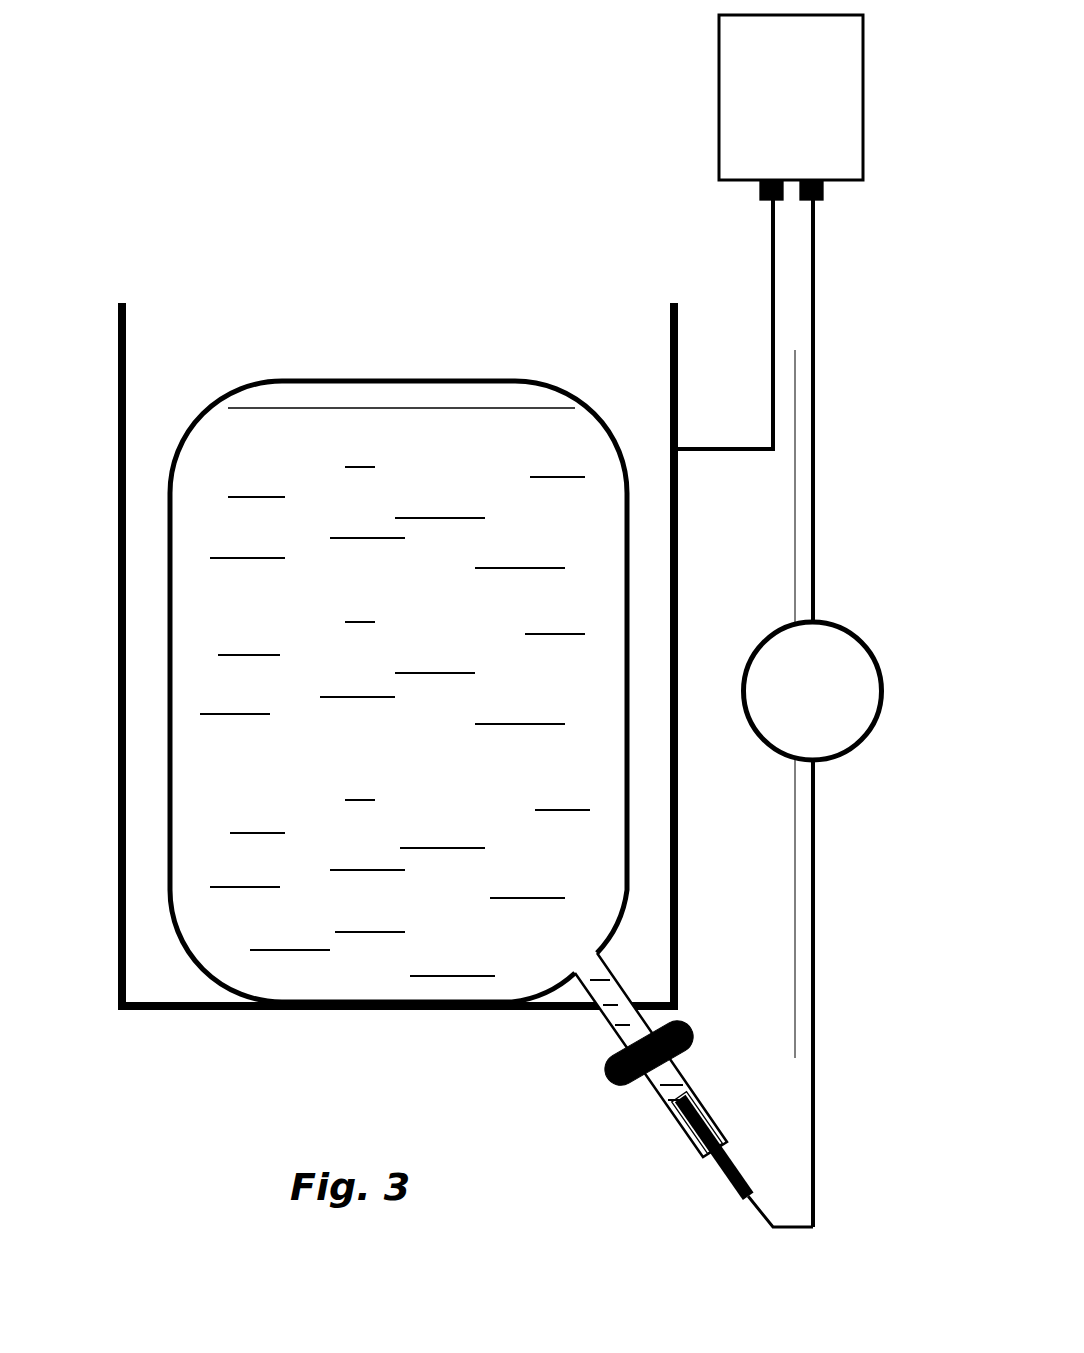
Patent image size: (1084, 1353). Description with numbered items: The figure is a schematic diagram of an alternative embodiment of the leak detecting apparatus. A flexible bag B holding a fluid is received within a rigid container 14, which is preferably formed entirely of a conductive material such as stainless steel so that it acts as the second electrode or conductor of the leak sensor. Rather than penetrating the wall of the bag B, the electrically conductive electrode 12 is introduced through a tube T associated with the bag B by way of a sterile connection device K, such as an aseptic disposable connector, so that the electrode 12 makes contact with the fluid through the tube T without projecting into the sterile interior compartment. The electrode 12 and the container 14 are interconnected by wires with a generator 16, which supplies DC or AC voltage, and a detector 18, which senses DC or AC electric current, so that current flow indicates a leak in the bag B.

The rigid container 14 is at (118, 360).
The bag B is at (250, 390).
The tube T is at (603, 1022).
The sterile connection device K is at (688, 1027).
The electrode 12 is at (725, 1178).
The generator 16 is at (722, 112).
The detector 18 is at (880, 670).